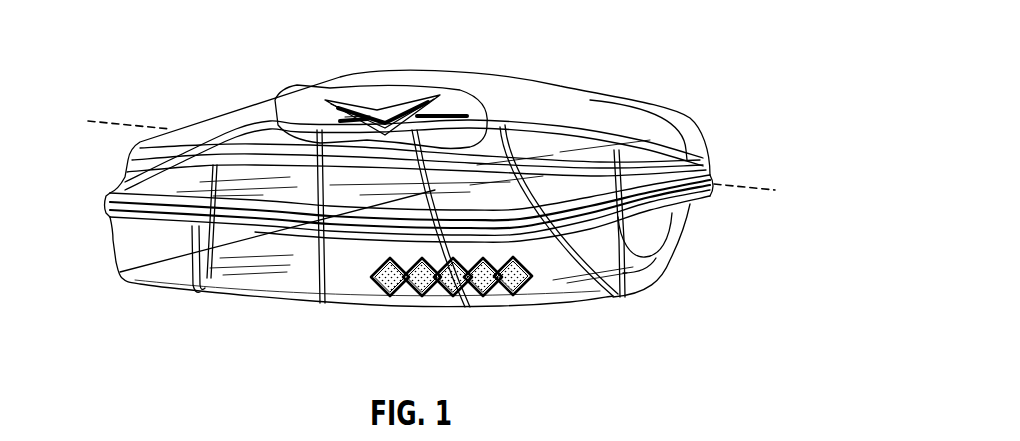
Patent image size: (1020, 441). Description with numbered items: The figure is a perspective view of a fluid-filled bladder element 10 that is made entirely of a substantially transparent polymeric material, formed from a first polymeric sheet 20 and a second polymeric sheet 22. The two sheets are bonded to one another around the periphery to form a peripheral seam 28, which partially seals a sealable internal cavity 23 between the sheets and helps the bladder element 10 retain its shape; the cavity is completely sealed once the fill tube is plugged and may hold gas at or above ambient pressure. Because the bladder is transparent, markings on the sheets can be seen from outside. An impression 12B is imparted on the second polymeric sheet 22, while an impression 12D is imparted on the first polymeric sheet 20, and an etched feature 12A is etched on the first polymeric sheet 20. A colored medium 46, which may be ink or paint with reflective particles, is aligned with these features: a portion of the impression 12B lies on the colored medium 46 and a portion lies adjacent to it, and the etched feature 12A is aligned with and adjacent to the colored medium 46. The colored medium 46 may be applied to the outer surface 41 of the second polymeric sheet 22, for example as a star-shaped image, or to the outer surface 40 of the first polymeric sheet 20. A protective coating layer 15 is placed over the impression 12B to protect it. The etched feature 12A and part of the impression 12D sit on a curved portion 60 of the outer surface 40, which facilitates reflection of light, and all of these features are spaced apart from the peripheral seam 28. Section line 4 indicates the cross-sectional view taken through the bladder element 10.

The section line 4- 4 is at (88, 121).
The fluid-filled bladder element 10 is at (511, 57).
The etched feature 12A is at (388, 298).
The impression 12B is at (410, 108).
The impression 12D is at (194, 290).
The protective coating layer 15 is at (357, 88).
The first polymeric sheet 20 is at (138, 238).
The second polymeric sheet 22 is at (257, 113).
The sealable internal cavity 23 is at (519, 166).
The peripheral seam 28 is at (716, 185).
The outer surface 40 is at (291, 283).
The outer surface 41 is at (585, 108).
The colored medium 46 is at (375, 112).
The curved portion 60 is at (557, 300).